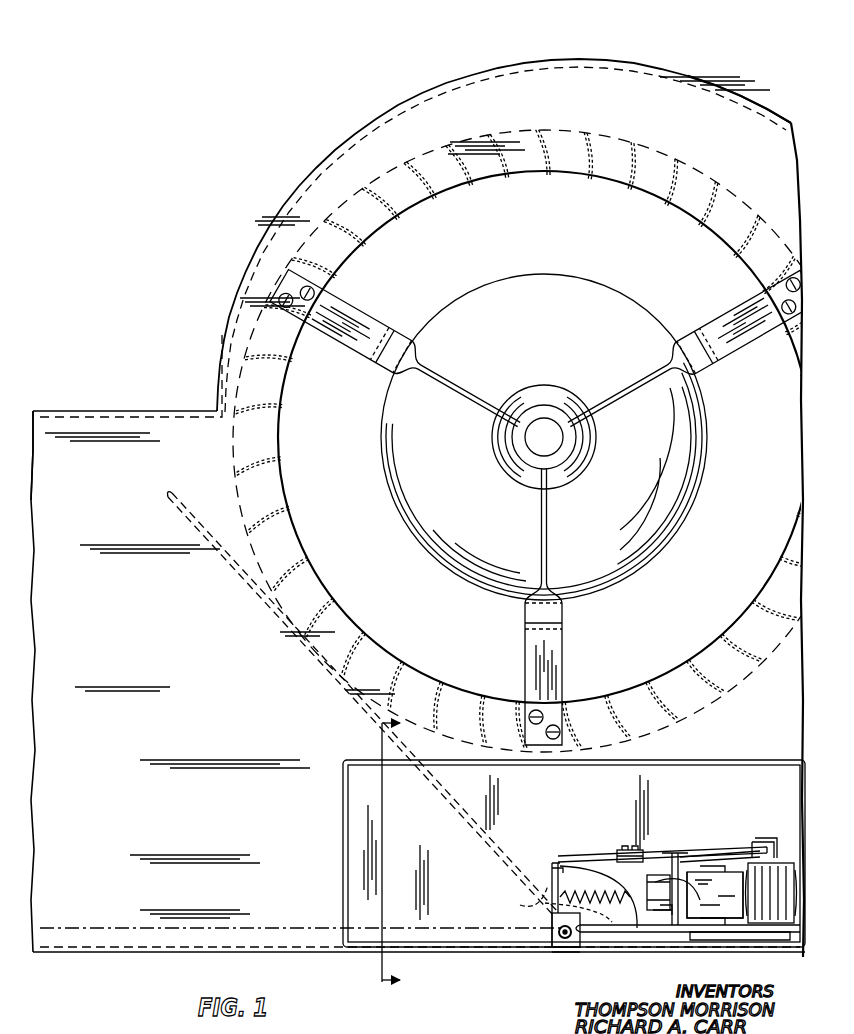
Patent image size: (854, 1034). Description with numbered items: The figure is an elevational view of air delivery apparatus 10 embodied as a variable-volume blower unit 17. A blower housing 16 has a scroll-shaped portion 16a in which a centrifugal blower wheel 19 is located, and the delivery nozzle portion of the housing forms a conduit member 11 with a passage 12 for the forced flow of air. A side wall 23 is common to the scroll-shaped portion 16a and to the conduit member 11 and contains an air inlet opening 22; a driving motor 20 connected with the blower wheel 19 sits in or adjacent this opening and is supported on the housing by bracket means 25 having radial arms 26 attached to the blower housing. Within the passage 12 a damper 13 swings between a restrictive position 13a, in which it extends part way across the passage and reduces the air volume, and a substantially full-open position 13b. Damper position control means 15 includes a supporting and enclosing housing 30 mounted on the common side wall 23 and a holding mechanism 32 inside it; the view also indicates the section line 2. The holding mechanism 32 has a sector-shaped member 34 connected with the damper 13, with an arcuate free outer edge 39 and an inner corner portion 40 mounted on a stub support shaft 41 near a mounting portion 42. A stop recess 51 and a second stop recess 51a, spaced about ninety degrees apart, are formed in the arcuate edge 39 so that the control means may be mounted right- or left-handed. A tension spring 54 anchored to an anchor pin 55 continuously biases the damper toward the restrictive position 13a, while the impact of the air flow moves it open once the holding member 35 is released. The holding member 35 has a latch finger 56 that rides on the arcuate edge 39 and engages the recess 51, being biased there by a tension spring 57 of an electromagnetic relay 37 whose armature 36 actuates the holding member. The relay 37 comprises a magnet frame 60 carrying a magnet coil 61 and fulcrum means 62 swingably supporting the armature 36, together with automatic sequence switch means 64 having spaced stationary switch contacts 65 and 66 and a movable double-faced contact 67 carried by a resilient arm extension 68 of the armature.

The air delivery apparatus 10 is at (77, 410).
The conduit member 11 is at (124, 410).
The passage 12 is at (163, 420).
The damper 13 is at (283, 606).
The restrictive position 13a is at (168, 502).
The open position 13b is at (75, 926).
The damper position control means 15 is at (343, 858).
The blower housing 16 is at (368, 150).
The scroll-shaped portion 16a is at (692, 76).
The variable-volume blower unit 17 is at (497, 62).
The centrifugal blower wheel 19 is at (602, 134).
The driving motor 20 is at (598, 291).
The air inlet opening 22 is at (442, 268).
The side wall 23 is at (46, 410).
The bracket means 25 is at (470, 393).
The radial arms 26 is at (620, 391).
The housing 30 is at (670, 772).
The section line 2- 2 is at (401, 861).
The holding mechanism 32 is at (605, 856).
The sector-shaped member 34 is at (552, 865).
The holding member 35 is at (618, 855).
The armature 36 is at (695, 856).
The electromagnetic relay 37 is at (712, 858).
The arcuate free outer edge 39 is at (650, 878).
The inner corner portion 40 is at (578, 948).
The support shaft 41 is at (562, 938).
The base 42 is at (552, 945).
The stop recess 51 is at (590, 868).
The second stop recess 51a is at (582, 916).
The tension spring 54 is at (528, 906).
The anchor pin 55 is at (660, 915).
The latch finger 56 is at (558, 866).
The tension spring 57 is at (715, 900).
The magnet frame 60 is at (695, 932).
The magnet coil 61 is at (740, 940).
The fulcrum means 62 is at (674, 853).
The automatic sequence switch means 64 is at (762, 848).
The stationary switch contact 65 is at (790, 866).
The stationary switch contact 66 is at (770, 868).
The movable double-faced contact 67 is at (742, 890).
The resilient arm extension 68 is at (758, 840).